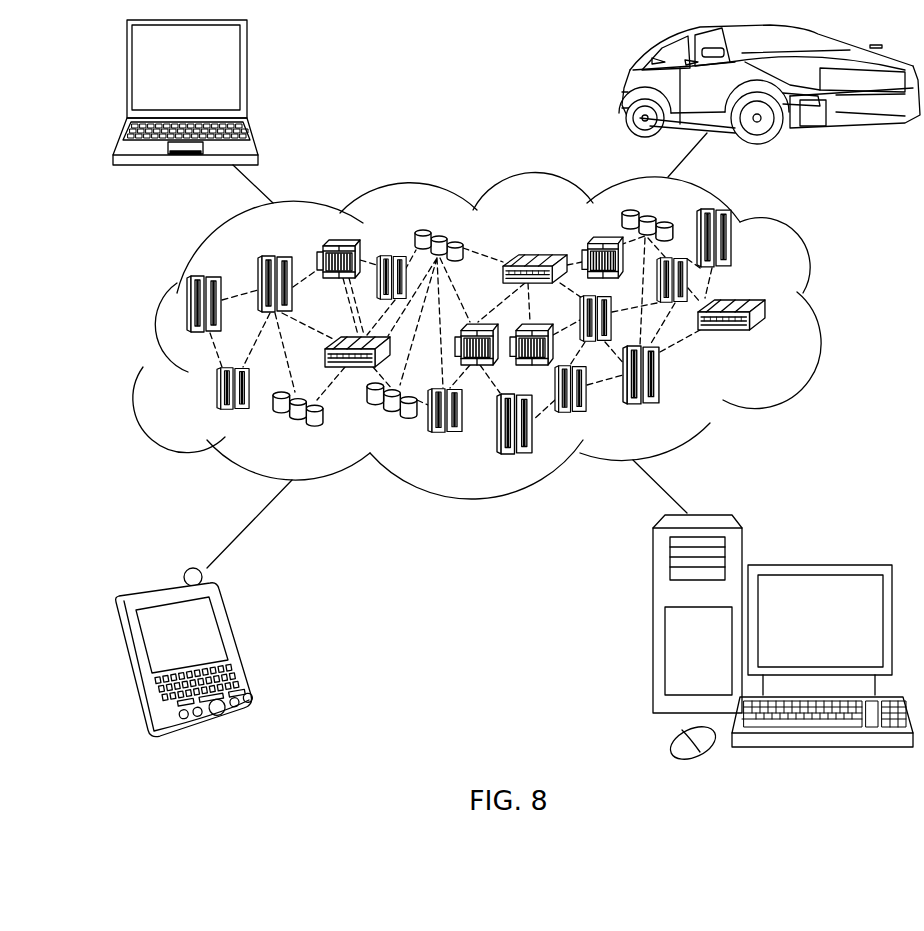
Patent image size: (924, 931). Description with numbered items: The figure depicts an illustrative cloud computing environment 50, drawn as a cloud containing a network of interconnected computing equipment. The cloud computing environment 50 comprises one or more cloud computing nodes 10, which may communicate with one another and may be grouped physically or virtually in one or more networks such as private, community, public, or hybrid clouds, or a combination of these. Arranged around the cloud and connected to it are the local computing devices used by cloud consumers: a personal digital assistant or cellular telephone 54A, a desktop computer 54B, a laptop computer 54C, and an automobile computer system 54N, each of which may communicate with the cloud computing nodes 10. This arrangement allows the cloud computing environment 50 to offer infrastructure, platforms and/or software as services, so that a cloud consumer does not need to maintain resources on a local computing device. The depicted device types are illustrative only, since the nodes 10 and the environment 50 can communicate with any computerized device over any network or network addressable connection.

The laptop computer 54C is at (247, 72).
The automobile computer system 54N is at (631, 90).
The cloud computing environment 50 is at (502, 336).
The cloud computing node 10 is at (770, 340).
The personal digital assistant (PDA) or cellular telephone 54A is at (240, 650).
The desktop computer 54B is at (818, 565).